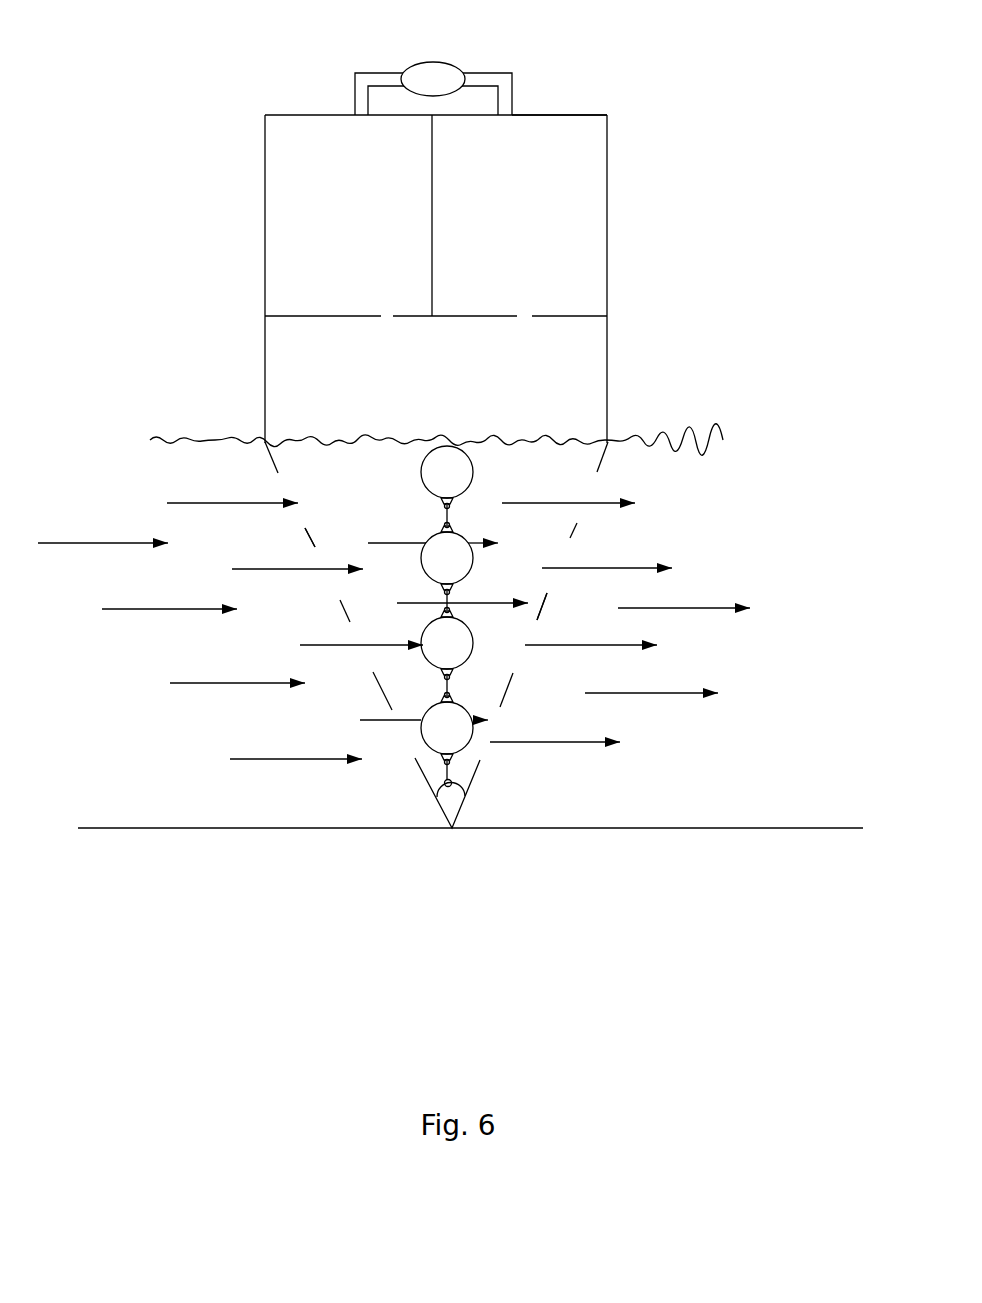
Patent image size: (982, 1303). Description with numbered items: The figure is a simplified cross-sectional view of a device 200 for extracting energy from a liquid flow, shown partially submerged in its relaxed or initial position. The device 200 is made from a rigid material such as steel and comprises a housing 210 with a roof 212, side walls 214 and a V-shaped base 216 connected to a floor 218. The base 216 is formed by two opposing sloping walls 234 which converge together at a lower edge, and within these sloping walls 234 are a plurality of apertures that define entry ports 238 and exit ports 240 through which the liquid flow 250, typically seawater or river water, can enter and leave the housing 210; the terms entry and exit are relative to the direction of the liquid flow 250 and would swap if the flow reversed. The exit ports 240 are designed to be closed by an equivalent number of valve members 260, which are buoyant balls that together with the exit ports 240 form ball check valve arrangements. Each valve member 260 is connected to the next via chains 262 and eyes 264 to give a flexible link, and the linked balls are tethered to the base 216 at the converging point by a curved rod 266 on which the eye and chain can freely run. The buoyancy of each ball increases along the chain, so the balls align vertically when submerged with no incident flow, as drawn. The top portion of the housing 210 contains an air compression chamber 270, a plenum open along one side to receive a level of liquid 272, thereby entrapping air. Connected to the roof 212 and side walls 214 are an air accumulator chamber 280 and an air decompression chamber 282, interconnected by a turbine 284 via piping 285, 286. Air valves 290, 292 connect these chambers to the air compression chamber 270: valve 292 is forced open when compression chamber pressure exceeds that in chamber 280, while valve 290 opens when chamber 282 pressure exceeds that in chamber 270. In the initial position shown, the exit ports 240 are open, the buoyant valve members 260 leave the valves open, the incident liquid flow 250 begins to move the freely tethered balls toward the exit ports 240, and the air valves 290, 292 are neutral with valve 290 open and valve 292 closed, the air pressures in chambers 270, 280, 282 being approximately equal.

The device 200 is at (717, 253).
The housing 210 is at (265, 170).
The roof 212 is at (568, 113).
The side walls 214 is at (607, 188).
The V-shaped base 216 is at (475, 777).
The floor 218 is at (690, 829).
The sloping walls 234 is at (302, 512).
The entry ports 238 is at (328, 582).
The exit ports 240 is at (522, 658).
The liquid flow 250 is at (88, 540).
The valve members 260 is at (447, 470).
The chains 262 is at (449, 517).
The eyes 264 is at (440, 503).
The curved rod 266 is at (450, 788).
The air compression chamber 270 is at (585, 387).
The level of liquid 272 is at (335, 442).
The air accumulator chamber 280 is at (374, 215).
The air decompression chamber 282 is at (463, 258).
The turbine 284 is at (433, 62).
The piping 285 is at (498, 72).
The piping 286 is at (360, 62).
The air valve 290 is at (518, 333).
The air valve 292 is at (381, 316).